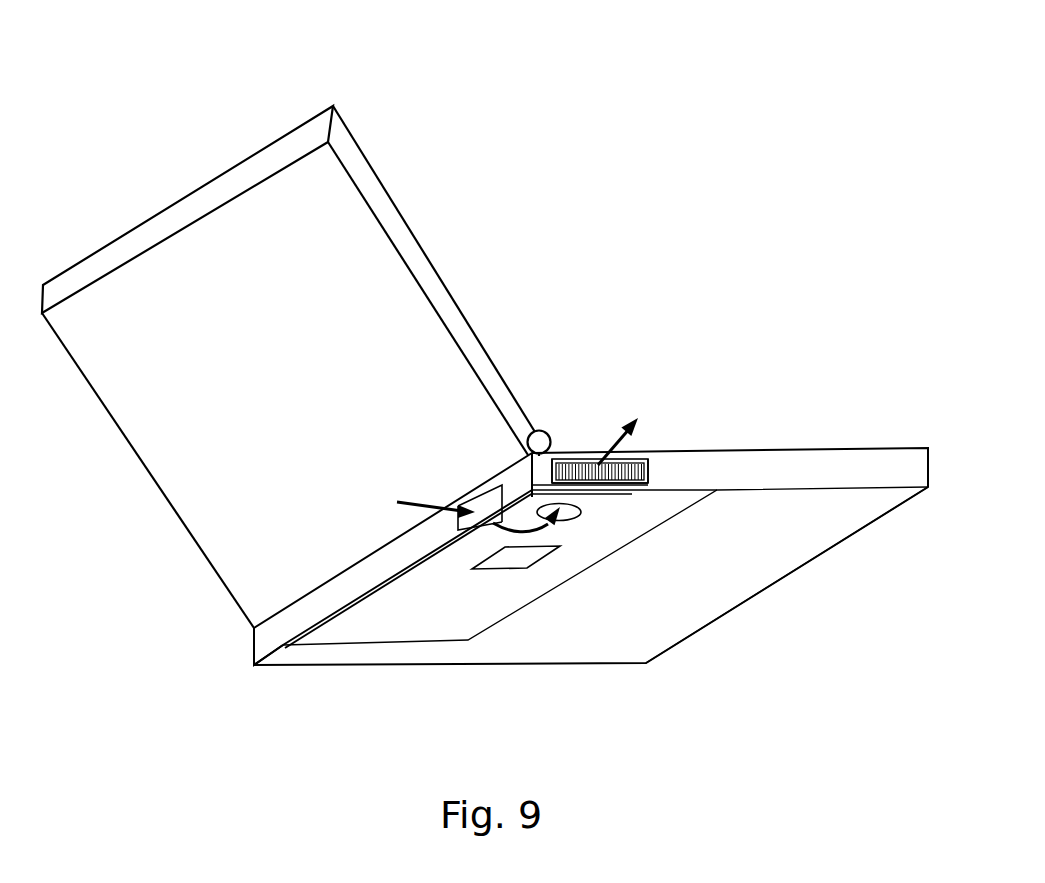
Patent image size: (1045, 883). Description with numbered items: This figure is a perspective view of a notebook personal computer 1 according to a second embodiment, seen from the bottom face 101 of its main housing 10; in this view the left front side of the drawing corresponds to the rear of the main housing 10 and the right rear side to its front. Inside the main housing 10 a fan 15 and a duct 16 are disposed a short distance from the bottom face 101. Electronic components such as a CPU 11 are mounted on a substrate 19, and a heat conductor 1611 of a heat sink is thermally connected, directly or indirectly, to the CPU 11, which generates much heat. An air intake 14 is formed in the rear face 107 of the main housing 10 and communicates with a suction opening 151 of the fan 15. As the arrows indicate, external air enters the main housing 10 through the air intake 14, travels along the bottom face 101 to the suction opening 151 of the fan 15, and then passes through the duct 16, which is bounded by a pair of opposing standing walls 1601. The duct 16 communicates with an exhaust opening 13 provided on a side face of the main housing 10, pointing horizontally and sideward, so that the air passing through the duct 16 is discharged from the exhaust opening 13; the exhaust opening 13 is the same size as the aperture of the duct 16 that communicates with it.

The notebook personal computer 1 is at (676, 103).
The main housing 10 is at (866, 408).
The bottom face 101 is at (813, 524).
The rear face 107 is at (265, 638).
The CPU 11 is at (490, 572).
The exhaust opening 13 is at (638, 457).
The air intake 14 is at (458, 529).
The fan 15 is at (601, 507).
The suction opening 151 is at (572, 522).
The duct 16 is at (640, 500).
The standing walls 1601 is at (541, 470).
The heat conductor 1611 is at (647, 481).
The substrate 19 is at (490, 628).